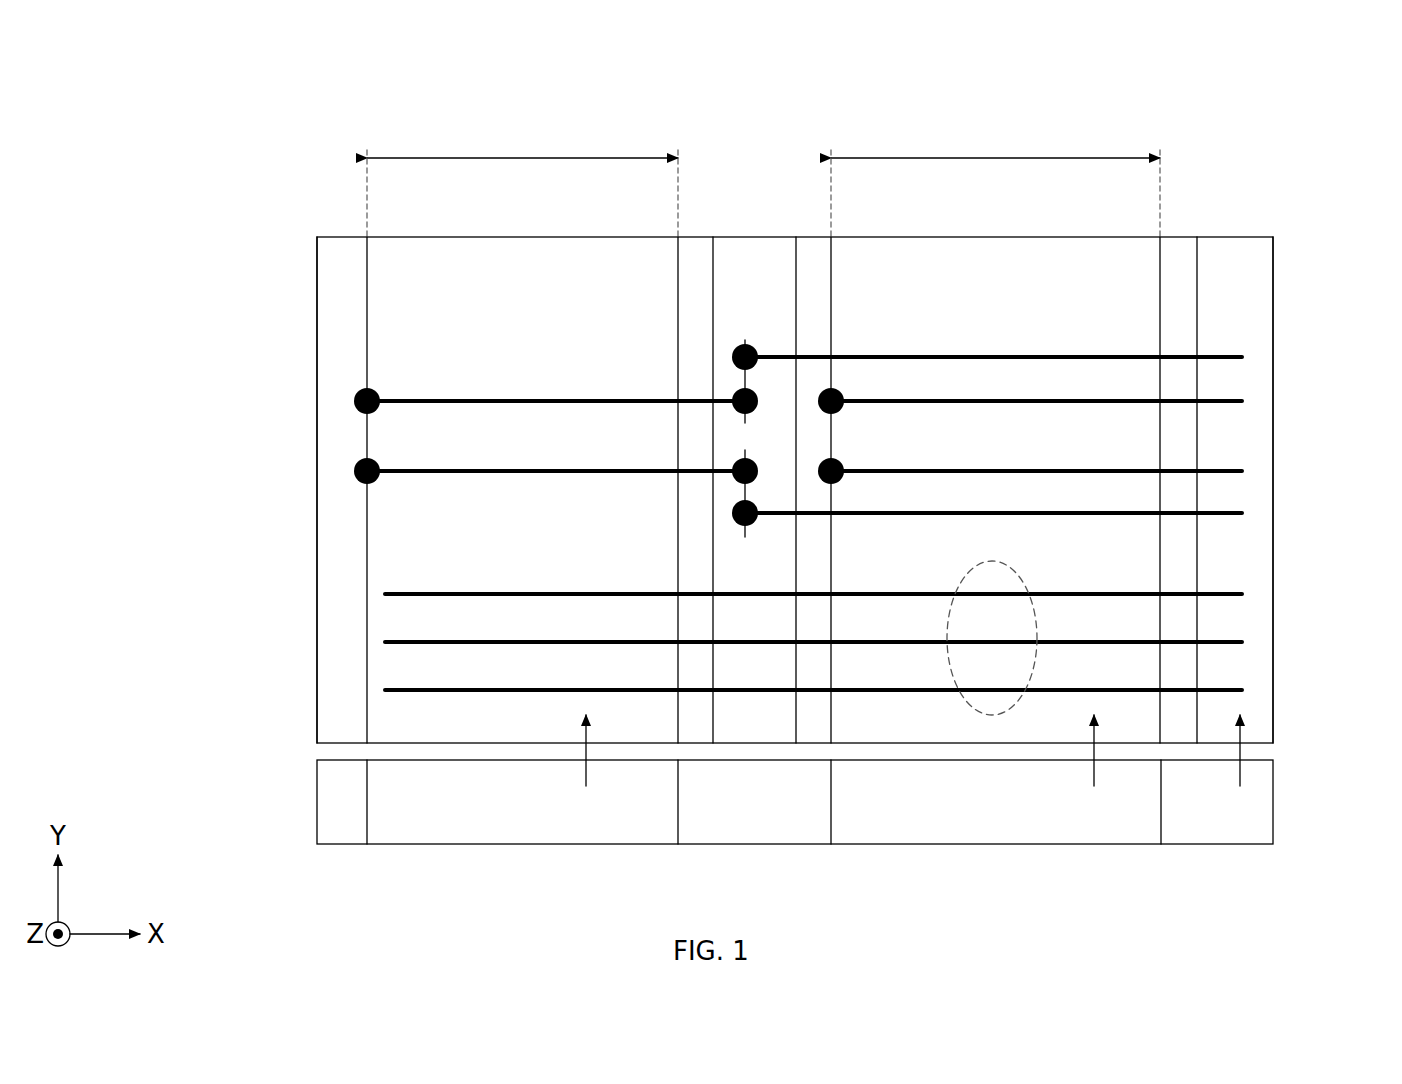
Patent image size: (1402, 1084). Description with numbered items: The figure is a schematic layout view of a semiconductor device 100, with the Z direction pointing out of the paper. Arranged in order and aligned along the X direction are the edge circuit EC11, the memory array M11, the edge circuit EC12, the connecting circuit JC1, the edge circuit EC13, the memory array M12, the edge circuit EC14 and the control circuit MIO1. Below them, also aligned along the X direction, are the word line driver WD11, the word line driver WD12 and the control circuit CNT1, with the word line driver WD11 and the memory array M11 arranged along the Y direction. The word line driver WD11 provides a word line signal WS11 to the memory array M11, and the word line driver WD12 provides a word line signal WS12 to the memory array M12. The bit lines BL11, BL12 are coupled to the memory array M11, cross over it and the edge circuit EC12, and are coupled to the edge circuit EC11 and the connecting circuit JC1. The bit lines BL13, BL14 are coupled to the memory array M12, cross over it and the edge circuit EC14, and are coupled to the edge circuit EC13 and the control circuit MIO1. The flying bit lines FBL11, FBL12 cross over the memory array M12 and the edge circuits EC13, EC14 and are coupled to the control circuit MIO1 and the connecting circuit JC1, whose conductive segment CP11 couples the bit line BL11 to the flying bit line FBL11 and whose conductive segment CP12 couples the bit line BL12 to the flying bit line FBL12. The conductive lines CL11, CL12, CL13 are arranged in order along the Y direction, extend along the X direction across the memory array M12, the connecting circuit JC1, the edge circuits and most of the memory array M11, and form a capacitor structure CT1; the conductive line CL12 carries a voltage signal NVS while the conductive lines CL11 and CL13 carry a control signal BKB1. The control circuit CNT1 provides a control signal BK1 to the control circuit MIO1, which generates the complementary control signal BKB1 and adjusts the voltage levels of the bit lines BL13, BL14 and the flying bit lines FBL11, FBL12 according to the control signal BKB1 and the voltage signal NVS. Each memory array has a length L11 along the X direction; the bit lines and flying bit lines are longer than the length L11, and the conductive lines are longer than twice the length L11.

The semiconductor device 100 is at (126, 70).
The length L11 is at (763, 179).
The edge circuit EC11 is at (317, 305).
The edge circuit EC12 is at (698, 243).
The edge circuit EC13 is at (816, 242).
The edge circuit EC14 is at (1178, 242).
The conductive segment CP11 is at (738, 355).
The conductive segment CP12 is at (734, 506).
The connecting circuit JC1 is at (728, 288).
The memory array M11 is at (494, 326).
The memory array M12 is at (971, 300).
The control circuit MIO1 is at (1258, 296).
The flying bit line FBL11 is at (1218, 357).
The flying bit line FBL12 is at (1218, 513).
The bit line BL11 is at (407, 401).
The bit line BL12 is at (407, 471).
The bit line BL13 is at (1218, 401).
The bit line BL14 is at (1218, 471).
The control signal BKB1 is at (519, 690).
The voltage signal NVS is at (594, 642).
The conductive line CL11 is at (407, 690).
The conductive line CL12 is at (407, 642).
The conductive line CL13 is at (407, 594).
The word line driver WD11 is at (483, 815).
The word line driver WD12 is at (950, 815).
The control circuit CNT1 is at (1170, 815).
The word line signal WS11 is at (586, 786).
The word line signal WS12 is at (1094, 786).
The capacitor structure CT1 is at (966, 705).
The control signal BK1 is at (1240, 786).